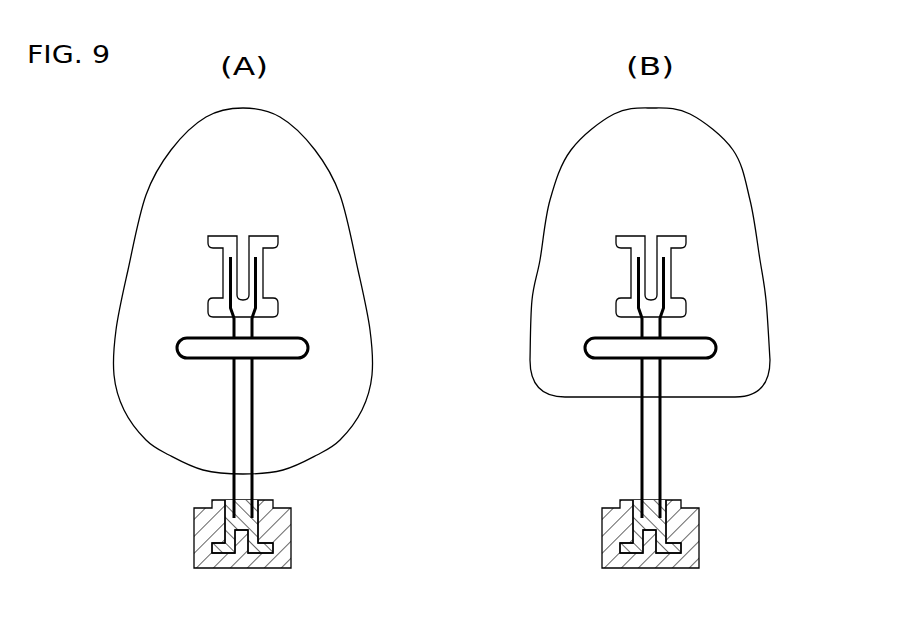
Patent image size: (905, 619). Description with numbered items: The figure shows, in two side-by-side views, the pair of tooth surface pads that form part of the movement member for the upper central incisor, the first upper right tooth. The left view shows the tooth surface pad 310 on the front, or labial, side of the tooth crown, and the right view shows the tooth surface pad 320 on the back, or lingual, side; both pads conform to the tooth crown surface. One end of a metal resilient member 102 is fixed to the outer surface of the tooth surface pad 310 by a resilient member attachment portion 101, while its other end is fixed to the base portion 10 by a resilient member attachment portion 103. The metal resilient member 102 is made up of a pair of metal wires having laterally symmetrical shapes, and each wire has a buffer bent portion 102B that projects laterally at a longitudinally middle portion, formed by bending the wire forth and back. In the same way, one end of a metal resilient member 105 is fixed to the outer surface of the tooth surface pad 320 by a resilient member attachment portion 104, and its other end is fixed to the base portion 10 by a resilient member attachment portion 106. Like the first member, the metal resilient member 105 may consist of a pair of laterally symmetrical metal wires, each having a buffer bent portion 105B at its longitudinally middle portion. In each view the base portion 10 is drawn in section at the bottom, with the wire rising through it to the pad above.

The base portion 10 is at (291, 534).
The resilient member attachment portion 101 is at (262, 268).
The metal resilient member 102 is at (233, 420).
The buffer bent portion 102B is at (180, 343).
The resilient member attachment portion 103 is at (231, 510).
The resilient member attachment portion 104 is at (668, 270).
The metal resilient member 105 is at (642, 430).
The buffer bent portion 105B is at (584, 350).
The resilient member attachment portion 106 is at (640, 512).
The tooth surface pad 310 is at (303, 183).
The tooth surface pad 320 is at (712, 183).